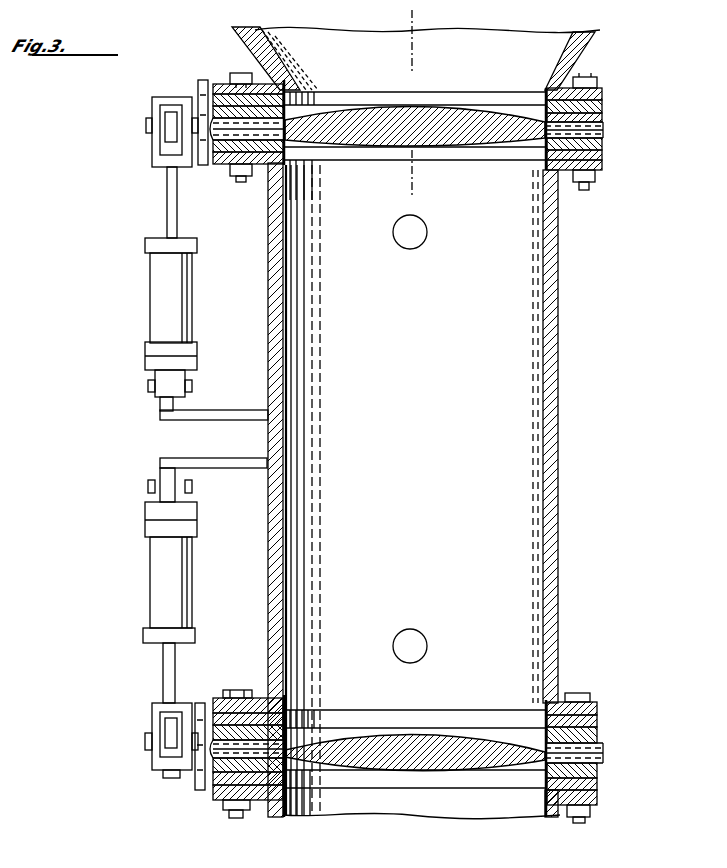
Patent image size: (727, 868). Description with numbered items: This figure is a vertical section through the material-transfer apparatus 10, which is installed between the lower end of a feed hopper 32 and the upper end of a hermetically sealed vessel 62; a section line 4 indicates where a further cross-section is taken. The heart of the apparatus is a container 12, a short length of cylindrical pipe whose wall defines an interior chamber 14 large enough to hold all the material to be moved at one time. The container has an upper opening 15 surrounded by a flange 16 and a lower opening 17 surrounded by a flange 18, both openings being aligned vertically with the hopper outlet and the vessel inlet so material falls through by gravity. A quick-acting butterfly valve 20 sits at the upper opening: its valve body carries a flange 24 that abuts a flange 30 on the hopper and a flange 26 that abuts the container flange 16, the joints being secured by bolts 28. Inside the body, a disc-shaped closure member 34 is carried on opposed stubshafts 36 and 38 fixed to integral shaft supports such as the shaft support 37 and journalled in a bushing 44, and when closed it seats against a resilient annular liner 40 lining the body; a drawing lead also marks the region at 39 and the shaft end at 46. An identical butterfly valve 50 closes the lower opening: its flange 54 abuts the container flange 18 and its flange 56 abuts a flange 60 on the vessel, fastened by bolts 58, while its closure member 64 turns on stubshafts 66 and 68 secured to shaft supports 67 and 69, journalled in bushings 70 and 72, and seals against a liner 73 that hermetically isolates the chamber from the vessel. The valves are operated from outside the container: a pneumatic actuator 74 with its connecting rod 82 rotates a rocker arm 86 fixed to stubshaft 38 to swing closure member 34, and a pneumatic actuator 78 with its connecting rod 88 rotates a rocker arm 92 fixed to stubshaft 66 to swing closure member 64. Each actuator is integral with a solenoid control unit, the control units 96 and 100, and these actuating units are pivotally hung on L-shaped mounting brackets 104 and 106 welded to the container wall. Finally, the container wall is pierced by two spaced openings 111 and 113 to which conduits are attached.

The section line 4- 4 is at (430, 17).
The apparatus 10 is at (606, 287).
The container 12 is at (560, 358).
The chamber 14 is at (412, 490).
The upper opening 15 is at (518, 160).
The flange 16 is at (598, 166).
The lower opening 17 is at (555, 693).
The flange 18 is at (600, 705).
The butterfly valve 20 is at (452, 158).
The flange 24 is at (605, 102).
The flange 26 is at (600, 150).
The bolts 28 is at (586, 190).
The flange 30 is at (605, 90).
The feed hopper 32 is at (590, 48).
The closure member 34 is at (445, 110).
The stubshaft 36 is at (604, 132).
The shaft support 37 is at (517, 103).
The stubshaft 38 is at (300, 95).
The sleeve bore 39 is at (330, 105).
The resilient annular liner 40 is at (345, 170).
The bushing 44 is at (603, 117).
The shaft left end 46 is at (262, 118).
The butterfly valve 50 is at (402, 722).
The flange 54 is at (600, 720).
The flange 56 is at (600, 782).
The bolts 58 is at (236, 818).
The flange 60 is at (590, 810).
The hermetic vessel 62 is at (276, 815).
The closure member 64 is at (416, 772).
The stubshaft 66 is at (213, 798).
The shaft support 67 is at (512, 728).
The stubshaft 68 is at (603, 753).
The shaft support 69 is at (312, 732).
The bushing 70 is at (600, 740).
The bushing 72 is at (245, 690).
The resilient annular liner 73 is at (487, 790).
The pneumatic actuator 74 is at (195, 280).
The pneumatic actuator 78 is at (193, 600).
The connecting rod 82 is at (180, 192).
The rocker arm 86 is at (198, 85).
The connecting rod 88 is at (178, 670).
The rocker arm 92 is at (166, 778).
The control unit 96 is at (197, 362).
The control unit 100 is at (198, 520).
The L-shaped mounting bracket 104 is at (230, 410).
The L-shaped mounting bracket 106 is at (213, 458).
The third opening 111 is at (424, 240).
The fourth opening 113 is at (422, 635).